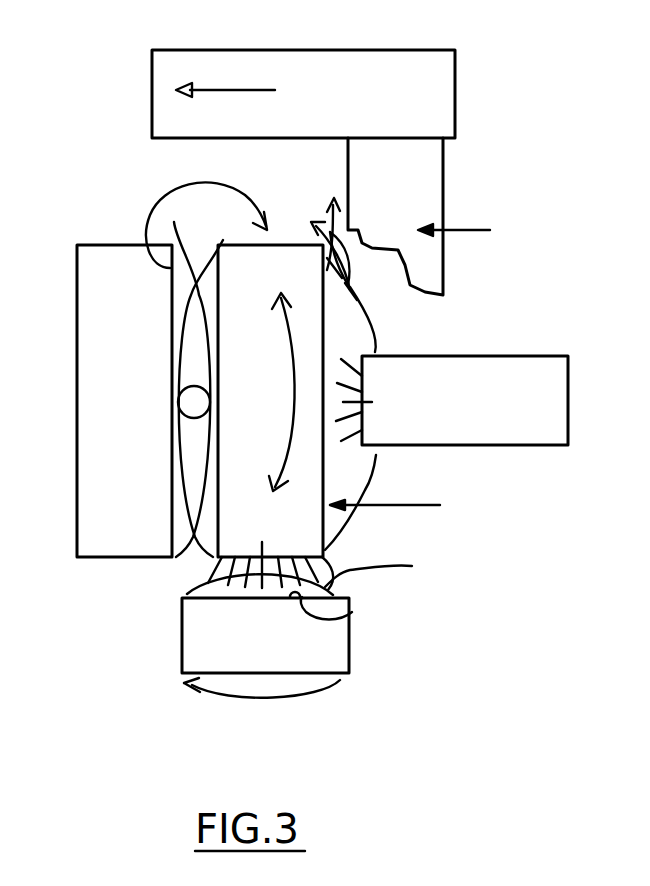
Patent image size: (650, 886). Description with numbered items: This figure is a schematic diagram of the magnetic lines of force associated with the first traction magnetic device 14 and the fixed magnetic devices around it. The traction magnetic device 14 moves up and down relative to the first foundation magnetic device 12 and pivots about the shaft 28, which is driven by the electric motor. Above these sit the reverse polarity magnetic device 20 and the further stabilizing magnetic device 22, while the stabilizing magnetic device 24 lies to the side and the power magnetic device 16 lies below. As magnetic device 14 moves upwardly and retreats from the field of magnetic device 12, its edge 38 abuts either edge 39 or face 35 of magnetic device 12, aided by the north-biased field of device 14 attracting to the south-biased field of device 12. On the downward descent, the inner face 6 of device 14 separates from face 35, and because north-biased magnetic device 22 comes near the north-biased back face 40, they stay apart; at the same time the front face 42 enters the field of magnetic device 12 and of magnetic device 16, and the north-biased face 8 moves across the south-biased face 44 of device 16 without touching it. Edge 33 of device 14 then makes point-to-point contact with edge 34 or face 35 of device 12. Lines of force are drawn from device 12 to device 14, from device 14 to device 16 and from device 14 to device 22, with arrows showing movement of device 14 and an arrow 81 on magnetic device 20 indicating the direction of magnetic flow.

The inner face 6 is at (217, 467).
The north-biased face 8 is at (323, 470).
The first foundation magnetic device 12 is at (124, 403).
The first traction magnetic device 14 is at (270, 403).
The power magnetic device 16 is at (265, 648).
The reverse polarity magnetic device 20 is at (310, 94).
The stabilizing magnetic device 22 is at (441, 216).
The stabilizing magnetic device 24 is at (452, 400).
The shaft 28 is at (182, 389).
The edge 33 is at (216, 558).
The edge 34 is at (172, 558).
The face 35 is at (167, 507).
The edge 38 is at (223, 240).
The edge 39 is at (174, 222).
The back face 40 is at (288, 243).
The front face 42 is at (325, 566).
The face 44 is at (352, 612).
The arrow 81 is at (236, 89).